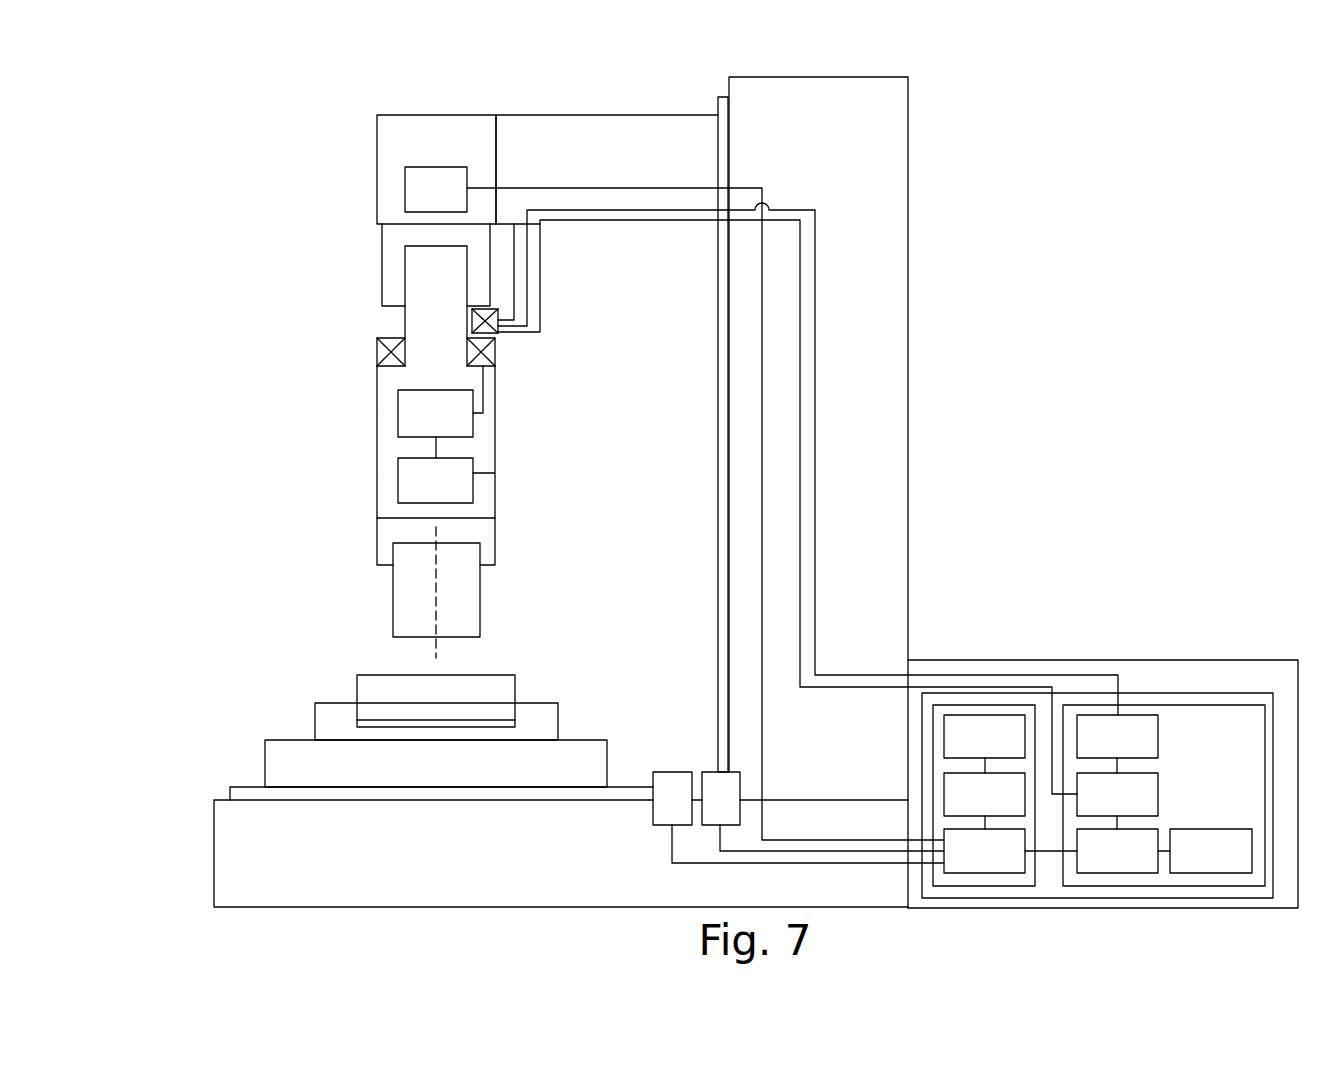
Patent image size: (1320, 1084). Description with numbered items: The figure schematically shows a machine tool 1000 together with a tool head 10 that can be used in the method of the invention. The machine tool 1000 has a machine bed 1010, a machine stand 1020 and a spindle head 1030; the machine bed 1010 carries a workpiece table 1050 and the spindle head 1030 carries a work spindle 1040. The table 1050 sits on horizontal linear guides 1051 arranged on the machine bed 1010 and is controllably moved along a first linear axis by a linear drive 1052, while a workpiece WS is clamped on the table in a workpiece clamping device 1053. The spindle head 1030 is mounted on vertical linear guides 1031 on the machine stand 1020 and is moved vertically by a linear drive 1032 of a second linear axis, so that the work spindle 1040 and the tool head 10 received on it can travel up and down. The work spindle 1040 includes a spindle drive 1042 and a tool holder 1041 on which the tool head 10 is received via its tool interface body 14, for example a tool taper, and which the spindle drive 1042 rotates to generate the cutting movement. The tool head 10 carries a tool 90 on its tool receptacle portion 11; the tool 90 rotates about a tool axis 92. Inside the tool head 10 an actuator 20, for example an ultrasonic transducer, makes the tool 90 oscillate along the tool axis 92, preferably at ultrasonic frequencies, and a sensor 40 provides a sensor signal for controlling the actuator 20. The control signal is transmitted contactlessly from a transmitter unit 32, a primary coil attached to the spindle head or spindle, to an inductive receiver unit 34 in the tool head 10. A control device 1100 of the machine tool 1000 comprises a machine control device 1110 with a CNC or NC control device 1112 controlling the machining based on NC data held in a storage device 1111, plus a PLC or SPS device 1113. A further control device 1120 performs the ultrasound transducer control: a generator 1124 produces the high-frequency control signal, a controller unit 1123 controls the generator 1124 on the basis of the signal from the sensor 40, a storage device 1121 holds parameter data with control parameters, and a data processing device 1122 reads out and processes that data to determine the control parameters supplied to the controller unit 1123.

The machine tool 1000 is at (701, 475).
The machine bed 1010 is at (214, 843).
The machine stand 1020 is at (908, 272).
The spindle head 1030 is at (528, 115).
The vertical linear guides 1031 is at (722, 97).
The linear drive 1032 is at (672, 780).
The work spindle 1040 is at (606, 441).
The tool holder 1041 is at (382, 249).
The spindle drive 1042 is at (403, 189).
The workpiece table 1050 is at (516, 757).
The horizontal linear guides 1051 is at (230, 795).
The linear drive 1052 is at (712, 780).
The workpiece clamping device 1053 is at (315, 735).
The workpiece WS is at (357, 694).
The tool head 10 is at (385, 465).
The tool receptacle portion 11 is at (377, 535).
The tool interface body 14 is at (405, 316).
The actuator 20 is at (410, 490).
The transmitter unit 32 is at (500, 330).
The receiver unit 34 is at (500, 355).
The sensor 40 is at (410, 404).
The tool 90 is at (387, 592).
The tool axis 92 is at (436, 609).
The control device 1100 is at (1111, 761).
The machine control device 1110 is at (987, 750).
The storage device 1111 is at (984, 736).
The CNC or NC control device 1112 is at (984, 787).
The PLC or SPS device 1113 is at (984, 844).
The control device 1120 is at (1169, 750).
The storage device 1121 is at (1205, 851).
The data processing device 1122 is at (1091, 844).
The controller unit 1123 is at (1117, 787).
The generator 1124 is at (1117, 736).